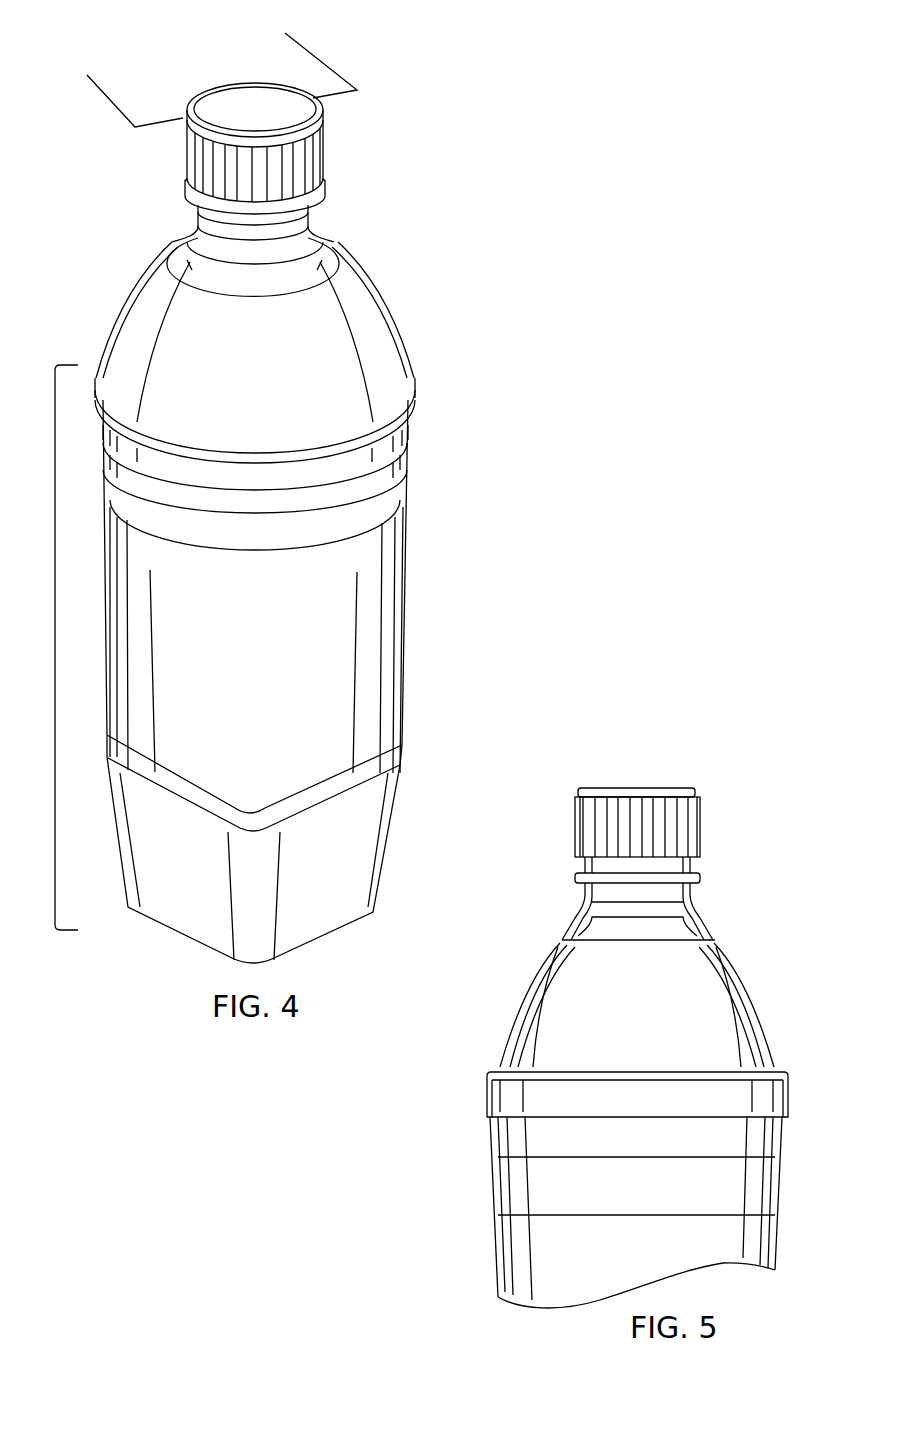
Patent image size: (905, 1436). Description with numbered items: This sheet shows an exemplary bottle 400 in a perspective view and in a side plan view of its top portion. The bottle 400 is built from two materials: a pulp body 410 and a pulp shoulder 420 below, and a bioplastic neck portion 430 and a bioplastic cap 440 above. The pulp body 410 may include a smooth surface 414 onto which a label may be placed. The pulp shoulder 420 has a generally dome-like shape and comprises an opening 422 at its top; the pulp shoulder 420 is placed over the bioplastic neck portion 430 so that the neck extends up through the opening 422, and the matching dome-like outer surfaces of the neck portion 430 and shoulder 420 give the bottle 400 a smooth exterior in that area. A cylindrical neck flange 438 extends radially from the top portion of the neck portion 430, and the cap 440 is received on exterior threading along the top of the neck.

In FIG. 4, the bottle 400 is at (466, 219).
In FIG. 5, the bottle 400 is at (630, 758).
In FIG. 4, the pulp body 410 is at (55, 647).
In FIG. 5, the pulp body 410 is at (486, 1189).
In FIG. 4, the smooth surface 414 is at (412, 532).
In FIG. 4, the pulp shoulder 420 is at (402, 322).
In FIG. 5, the pulp shoulder 420 is at (768, 1005).
In FIG. 4, the opening 422 is at (170, 248).
In FIG. 5, the opening 422 is at (715, 943).
In FIG. 4, the bioplastic neck portion 430 is at (329, 227).
In FIG. 5, the bioplastic neck portion 430 is at (564, 925).
In FIG. 4, the neck flange 438 is at (187, 187).
In FIG. 5, the neck flange 438 is at (700, 878).
In FIG. 4, the bioplastic cap 440 is at (332, 139).
In FIG. 5, the bioplastic cap 440 is at (710, 807).